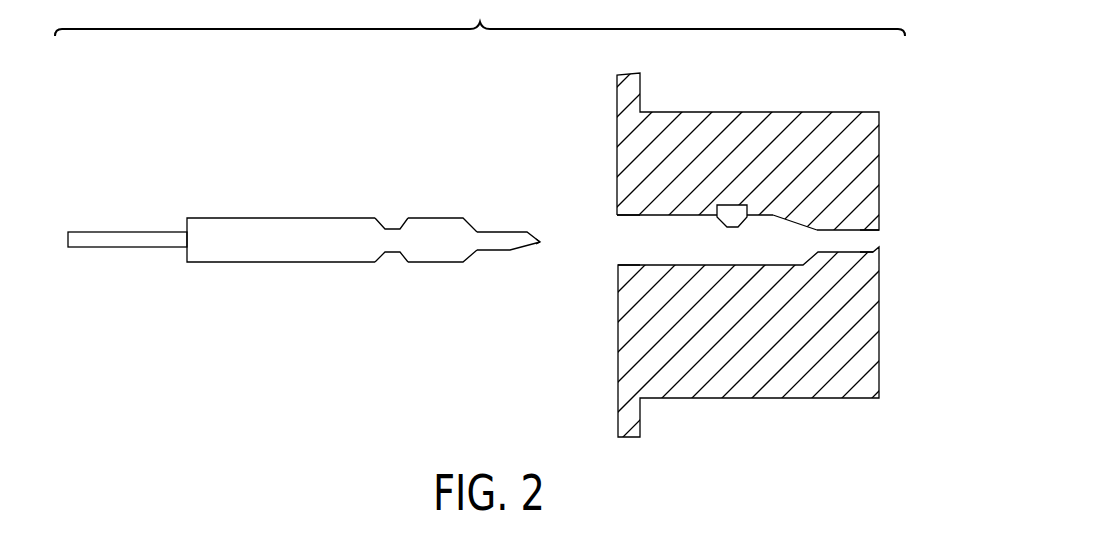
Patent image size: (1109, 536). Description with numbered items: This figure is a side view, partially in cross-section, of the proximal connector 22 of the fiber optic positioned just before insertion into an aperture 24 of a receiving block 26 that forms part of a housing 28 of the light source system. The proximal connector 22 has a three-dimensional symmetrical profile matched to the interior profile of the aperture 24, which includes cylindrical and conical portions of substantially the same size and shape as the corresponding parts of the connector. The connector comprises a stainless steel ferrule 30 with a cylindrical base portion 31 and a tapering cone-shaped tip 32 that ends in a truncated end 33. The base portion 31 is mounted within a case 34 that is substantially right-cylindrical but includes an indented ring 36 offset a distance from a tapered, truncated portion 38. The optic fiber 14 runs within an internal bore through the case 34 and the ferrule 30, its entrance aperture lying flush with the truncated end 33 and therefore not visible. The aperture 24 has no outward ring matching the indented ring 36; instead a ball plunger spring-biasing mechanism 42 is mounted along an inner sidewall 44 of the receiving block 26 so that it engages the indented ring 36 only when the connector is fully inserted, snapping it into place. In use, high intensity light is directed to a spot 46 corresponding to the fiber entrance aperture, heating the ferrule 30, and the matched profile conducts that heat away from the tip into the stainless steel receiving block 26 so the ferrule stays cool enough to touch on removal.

The optic fiber 14 is at (113, 242).
The proximal connector 22 is at (383, 258).
The aperture 24 is at (617, 242).
The receiving block 26 is at (764, 156).
The housing 28 is at (627, 412).
The ferrule 30 is at (520, 253).
The base portion 31 is at (510, 238).
The tip 32 is at (535, 233).
The truncated end 33 is at (540, 242).
The case 34 is at (297, 252).
The indented ring 36 is at (392, 260).
The tapered, truncated portion 38 is at (476, 222).
The ball plunger spring-biasing mechanism 42 is at (728, 223).
The inner sidewall 44 is at (773, 218).
The spot 46 is at (889, 245).